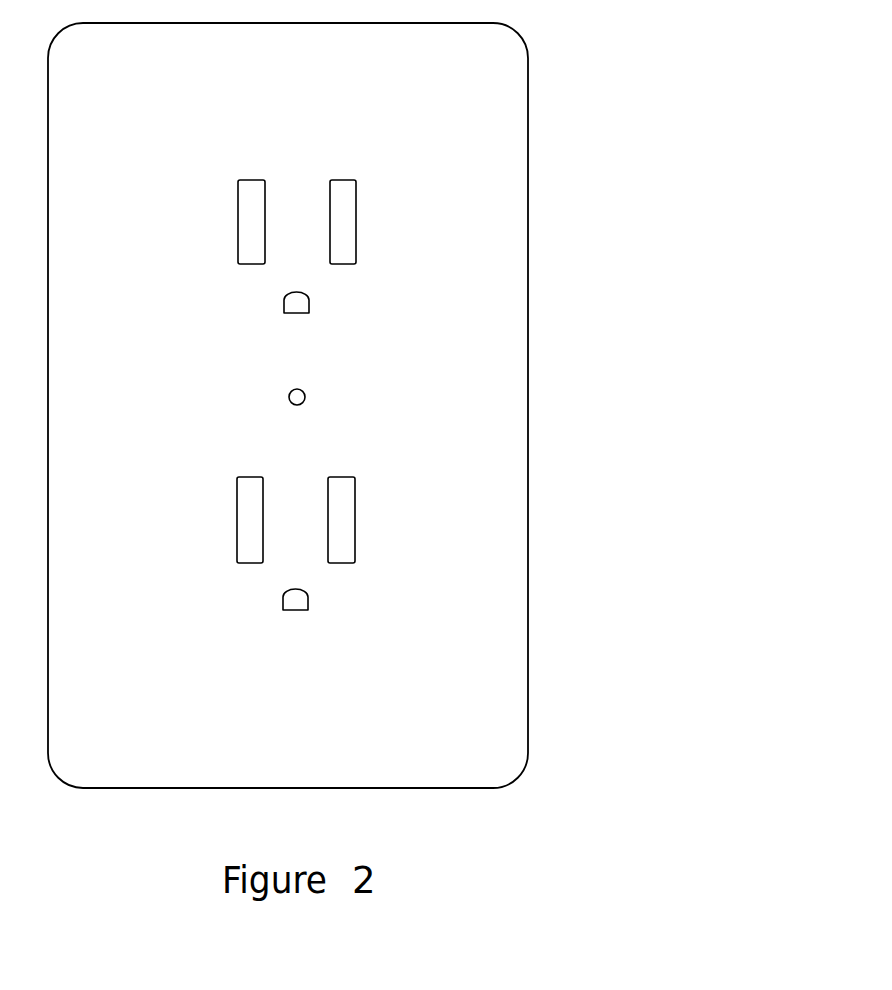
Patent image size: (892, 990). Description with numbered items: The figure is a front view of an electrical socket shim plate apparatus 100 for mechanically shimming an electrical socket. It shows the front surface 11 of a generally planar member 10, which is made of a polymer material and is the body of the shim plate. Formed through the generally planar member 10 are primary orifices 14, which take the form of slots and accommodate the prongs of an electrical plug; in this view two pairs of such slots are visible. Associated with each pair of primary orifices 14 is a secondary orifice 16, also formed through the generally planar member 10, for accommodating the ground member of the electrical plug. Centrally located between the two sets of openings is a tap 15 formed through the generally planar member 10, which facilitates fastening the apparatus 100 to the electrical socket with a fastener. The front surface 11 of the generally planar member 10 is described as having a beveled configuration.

The electrical socket shim plate apparatus 100 is at (588, 147).
The generally planar member 10 is at (528, 731).
The front surface 11 is at (502, 690).
The primary orifices 14 is at (265, 180).
The tap 15 is at (305, 400).
The secondary orifice 16 is at (309, 303).